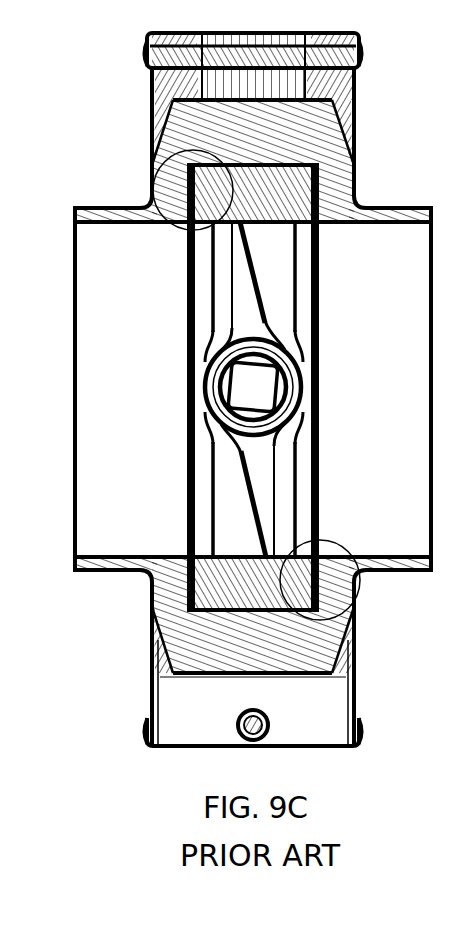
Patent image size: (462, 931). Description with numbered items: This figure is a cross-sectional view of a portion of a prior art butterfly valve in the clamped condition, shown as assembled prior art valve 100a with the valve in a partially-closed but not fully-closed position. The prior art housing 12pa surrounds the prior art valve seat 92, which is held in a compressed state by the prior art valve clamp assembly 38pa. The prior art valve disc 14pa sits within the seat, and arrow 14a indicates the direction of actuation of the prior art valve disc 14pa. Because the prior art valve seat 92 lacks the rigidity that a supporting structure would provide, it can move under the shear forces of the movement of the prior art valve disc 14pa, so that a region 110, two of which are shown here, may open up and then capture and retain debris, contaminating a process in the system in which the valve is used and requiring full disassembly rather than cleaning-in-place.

The assembled prior art valve 100a is at (112, 177).
The region 110 is at (150, 90).
The prior art housing 12pa is at (345, 186).
The arrow 14a is at (264, 254).
The prior art valve disc 14pa is at (263, 492).
The prior art valve seat 92 is at (165, 651).
The prior art valve clamp assembly 38pa is at (195, 708).